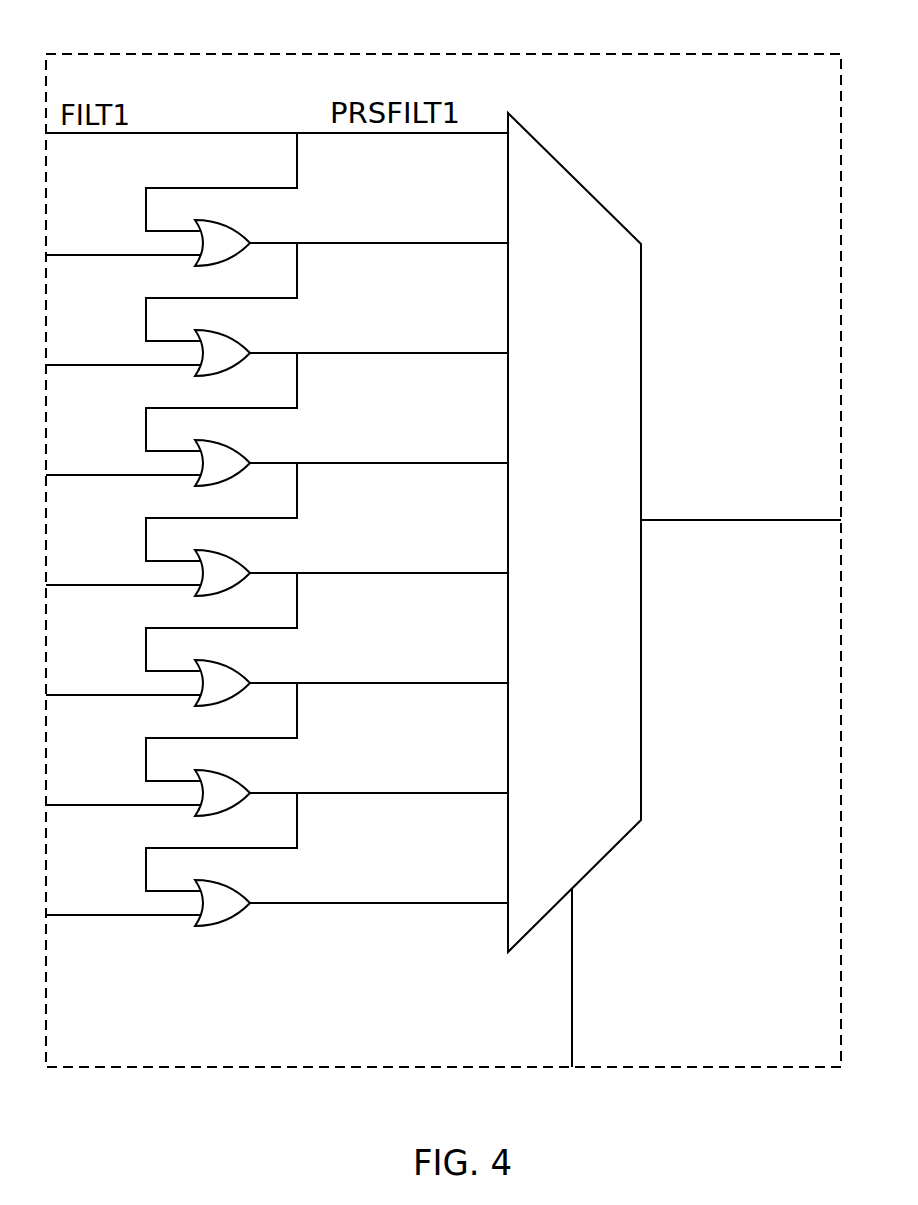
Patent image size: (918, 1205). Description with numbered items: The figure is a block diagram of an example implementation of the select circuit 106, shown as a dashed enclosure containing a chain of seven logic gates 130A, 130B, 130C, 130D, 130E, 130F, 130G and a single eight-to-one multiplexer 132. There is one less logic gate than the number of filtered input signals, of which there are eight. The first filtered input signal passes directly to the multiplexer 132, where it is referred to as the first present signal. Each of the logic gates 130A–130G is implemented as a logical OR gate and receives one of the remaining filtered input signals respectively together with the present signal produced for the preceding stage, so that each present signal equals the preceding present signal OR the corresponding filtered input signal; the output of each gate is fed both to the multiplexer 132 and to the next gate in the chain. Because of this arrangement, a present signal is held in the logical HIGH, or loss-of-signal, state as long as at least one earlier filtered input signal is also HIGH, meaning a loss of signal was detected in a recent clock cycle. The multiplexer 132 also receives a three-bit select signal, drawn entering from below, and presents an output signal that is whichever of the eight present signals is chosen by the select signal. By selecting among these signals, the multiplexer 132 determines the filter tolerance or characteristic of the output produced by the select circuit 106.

The select circuit 106 is at (184, 54).
The multiplexer 132 is at (597, 199).
The logic gate 130A is at (214, 221).
The logic gate 130B is at (214, 331).
The logic gate 130C is at (214, 441).
The logic gate 130D is at (214, 551).
The logic gate 130E is at (214, 661).
The logic gate 130F is at (214, 771).
The logic gate 130G is at (214, 881).